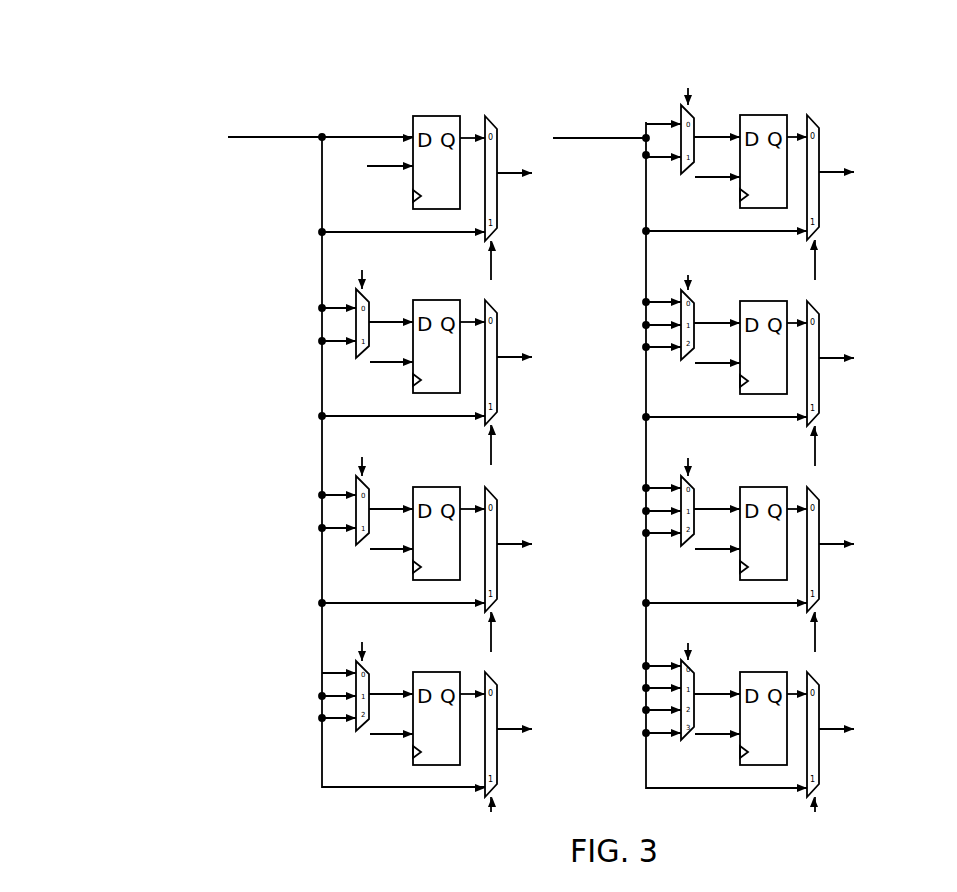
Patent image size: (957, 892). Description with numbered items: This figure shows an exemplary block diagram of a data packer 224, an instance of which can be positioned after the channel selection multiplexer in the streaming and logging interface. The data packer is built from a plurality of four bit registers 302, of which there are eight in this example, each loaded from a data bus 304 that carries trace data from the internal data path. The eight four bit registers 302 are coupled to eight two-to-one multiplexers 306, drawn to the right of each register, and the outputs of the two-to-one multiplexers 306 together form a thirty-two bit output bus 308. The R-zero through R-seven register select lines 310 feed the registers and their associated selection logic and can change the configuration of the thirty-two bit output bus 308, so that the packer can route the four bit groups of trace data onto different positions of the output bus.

The data packer 224 is at (162, 70).
The four bit register 302 is at (763, 120).
The data bus 304 is at (258, 137).
The two-to-one multiplexer 306 is at (486, 120).
The 32 bit output bus 308 is at (510, 357).
The register select lines 310 is at (367, 167).